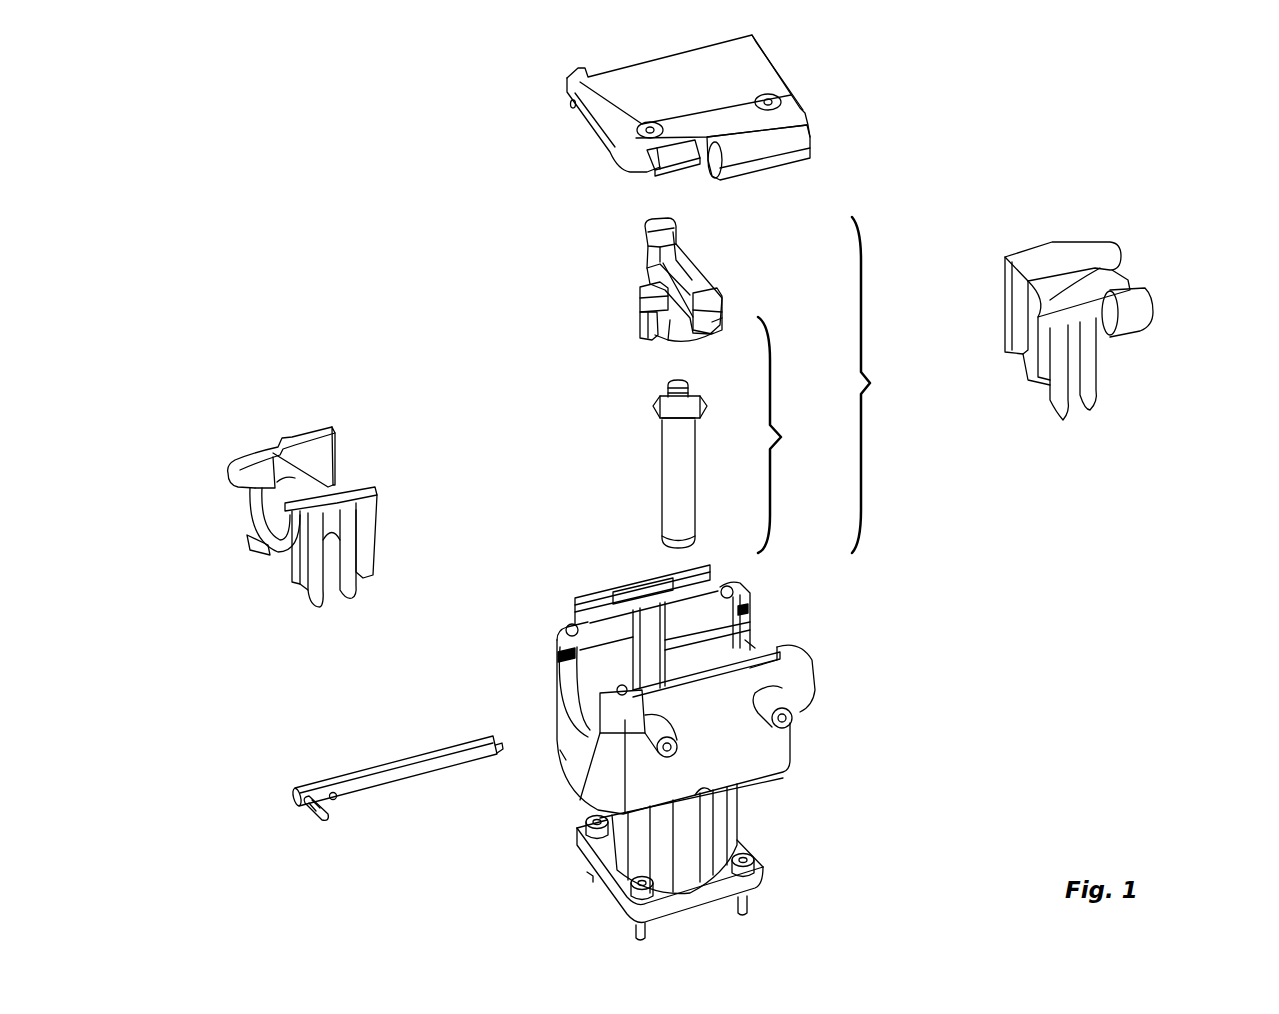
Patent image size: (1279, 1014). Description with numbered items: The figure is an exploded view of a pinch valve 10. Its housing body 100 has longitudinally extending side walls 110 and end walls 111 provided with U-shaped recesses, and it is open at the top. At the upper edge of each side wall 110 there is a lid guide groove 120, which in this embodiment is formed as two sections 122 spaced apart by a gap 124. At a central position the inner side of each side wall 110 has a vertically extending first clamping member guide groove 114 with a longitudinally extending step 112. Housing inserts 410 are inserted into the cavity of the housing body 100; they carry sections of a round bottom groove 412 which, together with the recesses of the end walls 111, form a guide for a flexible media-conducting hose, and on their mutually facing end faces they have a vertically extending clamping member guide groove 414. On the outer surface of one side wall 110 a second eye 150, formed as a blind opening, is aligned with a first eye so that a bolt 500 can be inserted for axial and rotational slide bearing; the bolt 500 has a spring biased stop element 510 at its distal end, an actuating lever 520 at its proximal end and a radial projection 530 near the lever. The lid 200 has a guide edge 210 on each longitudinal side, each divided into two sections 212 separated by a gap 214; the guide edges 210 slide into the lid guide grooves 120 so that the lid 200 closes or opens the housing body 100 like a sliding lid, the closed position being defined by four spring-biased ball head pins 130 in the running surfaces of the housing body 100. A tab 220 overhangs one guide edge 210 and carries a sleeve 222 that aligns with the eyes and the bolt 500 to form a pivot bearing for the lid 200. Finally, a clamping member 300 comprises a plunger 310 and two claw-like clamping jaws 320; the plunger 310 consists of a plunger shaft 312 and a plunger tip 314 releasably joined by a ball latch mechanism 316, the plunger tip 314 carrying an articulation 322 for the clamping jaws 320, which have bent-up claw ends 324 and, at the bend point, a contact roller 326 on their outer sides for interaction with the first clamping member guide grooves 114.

The pinch valve 10 is at (340, 228).
The housing body 100 is at (805, 843).
The side walls 110 is at (698, 713).
The end walls 111 is at (750, 643).
The step 112 is at (570, 653).
The first clamping member guide groove 114 is at (650, 665).
The lid guide groove 120 is at (593, 587).
The sections 122 is at (592, 602).
The gap 124 is at (642, 590).
The spring-biased ball head pins 130 is at (567, 627).
The second eye 150 is at (803, 672).
The lid 200 is at (818, 57).
The guide edge 210 is at (663, 162).
The sections 212 is at (677, 167).
The gap 214 is at (637, 137).
The tab 220 is at (735, 118).
The sleeve 222 is at (743, 165).
The clamping member 300 is at (891, 385).
The plunger 310 is at (796, 435).
The plunger shaft 312 is at (672, 460).
The plunger tip 314 is at (647, 328).
The ball latch mechanism 316 is at (668, 395).
The clamping jaws 320 is at (663, 267).
The articulation 322 is at (655, 298).
The claw ends 324 is at (655, 233).
The contact roller 326 is at (720, 315).
The housing inserts 410 is at (235, 440).
The round bottom groove 412 is at (272, 505).
The clamping member guide groove 414 is at (1043, 375).
The bolt 500 is at (392, 773).
The spring biased stop element 510 is at (487, 742).
The actuating lever 520 is at (315, 815).
The radial projection 530 is at (333, 799).